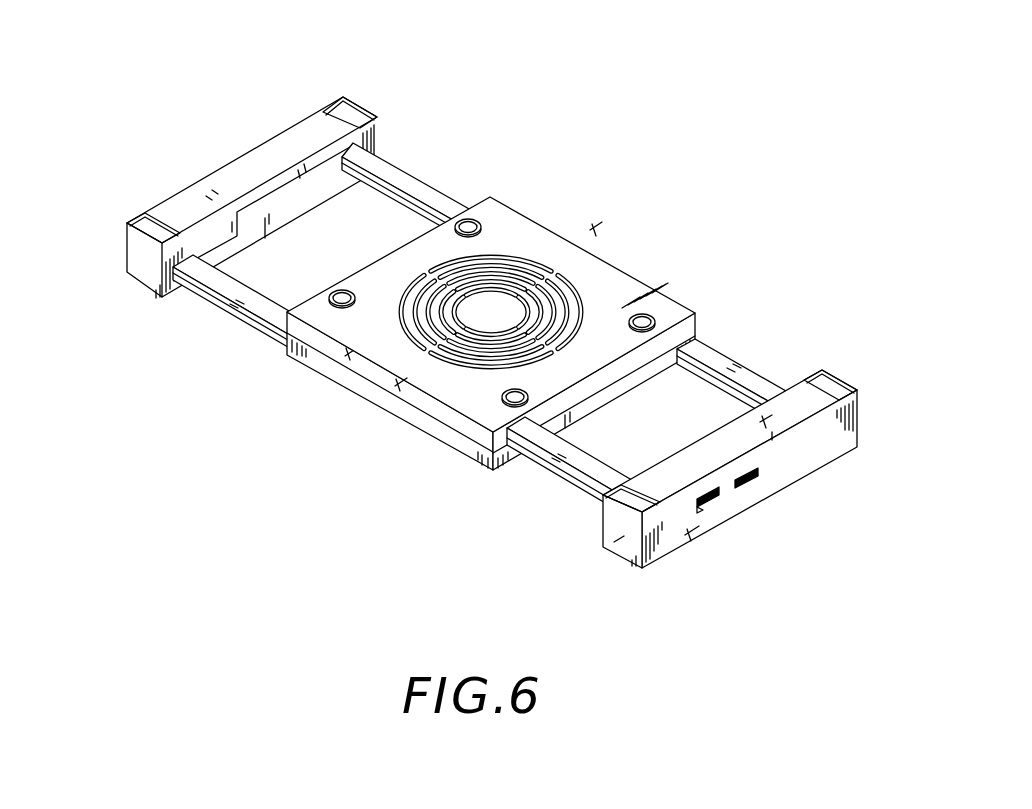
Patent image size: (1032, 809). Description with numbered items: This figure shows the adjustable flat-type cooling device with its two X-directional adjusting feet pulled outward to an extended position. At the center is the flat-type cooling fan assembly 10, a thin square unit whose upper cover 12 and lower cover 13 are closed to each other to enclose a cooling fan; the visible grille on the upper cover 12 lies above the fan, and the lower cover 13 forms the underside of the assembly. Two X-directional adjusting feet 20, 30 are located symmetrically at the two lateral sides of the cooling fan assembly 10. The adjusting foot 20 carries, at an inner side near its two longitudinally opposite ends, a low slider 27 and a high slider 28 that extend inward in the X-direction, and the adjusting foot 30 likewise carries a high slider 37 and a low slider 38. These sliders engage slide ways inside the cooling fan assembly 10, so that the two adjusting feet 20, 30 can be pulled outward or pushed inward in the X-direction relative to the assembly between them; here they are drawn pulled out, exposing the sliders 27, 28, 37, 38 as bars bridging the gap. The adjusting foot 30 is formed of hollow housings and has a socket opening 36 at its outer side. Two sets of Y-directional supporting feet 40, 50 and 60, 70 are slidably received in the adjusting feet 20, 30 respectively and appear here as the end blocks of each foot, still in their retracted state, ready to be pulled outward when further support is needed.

The flat-type cooling fan assembly 10 is at (491, 296).
The upper cover 12 is at (618, 293).
The lower cover 13 is at (405, 410).
The X-directional adjusting foot 20 is at (223, 171).
The low slider 27 is at (232, 306).
The high slider 28 is at (430, 185).
The X-directional adjusting foot 30 is at (718, 447).
The socket opening 36 is at (712, 510).
The high slider 37 is at (560, 462).
The low slider 38 is at (742, 370).
The Y-directional supporting foot 40 is at (130, 275).
The Y-directional supporting foot 50 is at (365, 100).
The Y-directional supporting foot 60 is at (610, 542).
The Y-directional supporting foot 70 is at (848, 383).